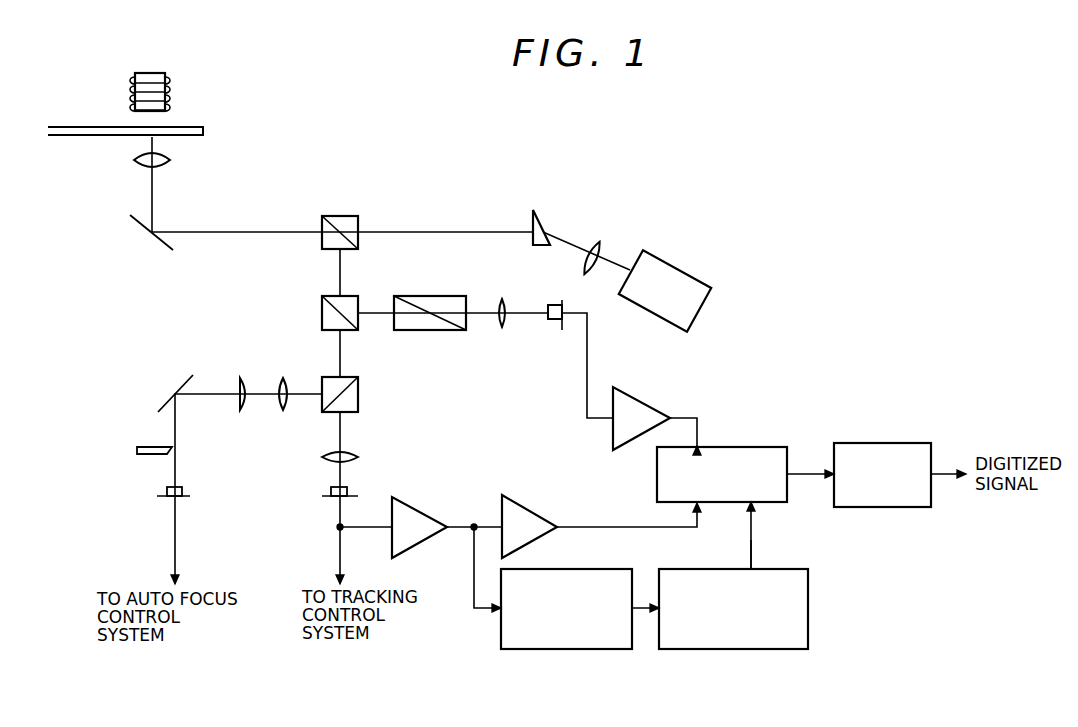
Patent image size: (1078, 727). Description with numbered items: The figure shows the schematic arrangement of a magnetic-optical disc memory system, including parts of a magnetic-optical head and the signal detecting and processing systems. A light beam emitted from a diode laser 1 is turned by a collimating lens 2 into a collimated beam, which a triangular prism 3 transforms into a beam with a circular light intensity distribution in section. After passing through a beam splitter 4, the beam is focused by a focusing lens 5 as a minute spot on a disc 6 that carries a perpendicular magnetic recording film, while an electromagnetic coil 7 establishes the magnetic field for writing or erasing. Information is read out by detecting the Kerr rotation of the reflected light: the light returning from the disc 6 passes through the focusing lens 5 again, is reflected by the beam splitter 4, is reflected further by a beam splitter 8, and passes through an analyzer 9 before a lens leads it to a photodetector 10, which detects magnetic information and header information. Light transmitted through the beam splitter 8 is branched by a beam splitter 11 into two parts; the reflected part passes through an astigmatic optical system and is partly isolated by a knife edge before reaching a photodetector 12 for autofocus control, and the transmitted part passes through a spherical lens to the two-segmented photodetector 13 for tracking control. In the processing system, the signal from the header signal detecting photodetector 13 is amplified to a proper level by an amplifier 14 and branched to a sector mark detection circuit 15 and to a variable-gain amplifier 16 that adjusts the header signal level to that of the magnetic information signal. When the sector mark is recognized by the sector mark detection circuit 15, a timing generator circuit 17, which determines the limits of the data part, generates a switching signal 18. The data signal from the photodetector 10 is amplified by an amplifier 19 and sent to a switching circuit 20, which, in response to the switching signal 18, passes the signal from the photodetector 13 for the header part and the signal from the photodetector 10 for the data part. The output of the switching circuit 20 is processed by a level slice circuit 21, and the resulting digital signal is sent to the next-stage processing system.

The diode laser 1 is at (667, 264).
The collimating lens 2 is at (595, 240).
The triangular prism 3 is at (543, 214).
The beam splitter 4 is at (335, 216).
The focusing lens 5 is at (170, 160).
The disc 6 is at (203, 131).
The electromagnetic coil 7 is at (172, 78).
The beam splitter 8 is at (350, 296).
The analyzer 9 is at (425, 296).
The photodetector 10 is at (550, 322).
The beam splitter 11 is at (358, 395).
The photodetector 12 is at (160, 490).
The photodetector 13 is at (348, 489).
The amplifier 14 is at (415, 505).
The sector mark detection circuit 15 is at (561, 569).
The variable-gain amplifier 16 is at (515, 505).
The timing generator circuit 17 is at (780, 569).
The switching signal 18 is at (752, 536).
The amplifier 19 is at (648, 402).
The switching circuit 20 is at (745, 447).
The level slice circuit 21 is at (868, 507).